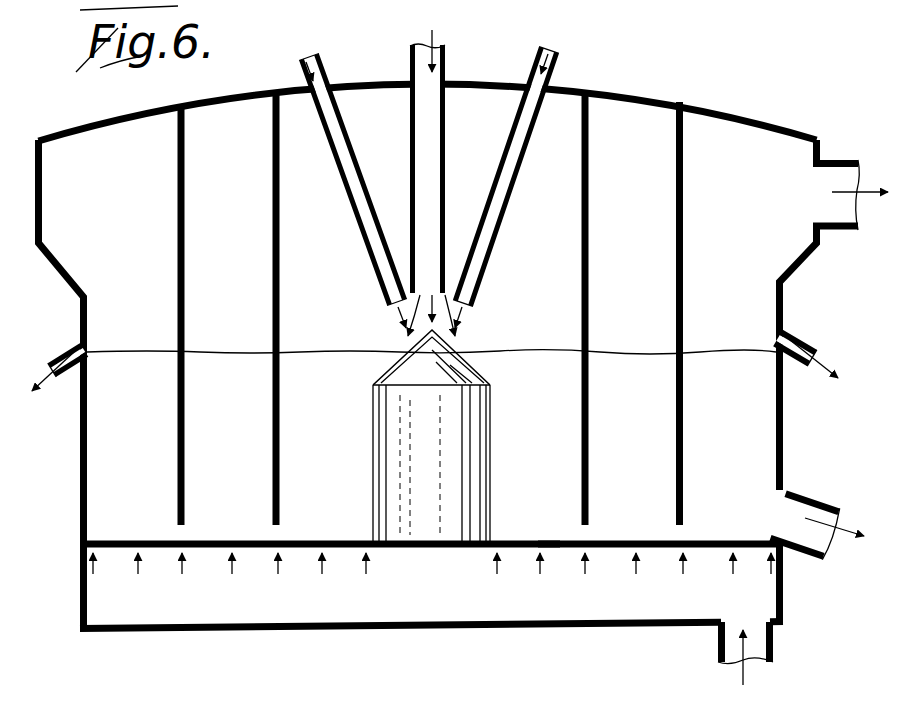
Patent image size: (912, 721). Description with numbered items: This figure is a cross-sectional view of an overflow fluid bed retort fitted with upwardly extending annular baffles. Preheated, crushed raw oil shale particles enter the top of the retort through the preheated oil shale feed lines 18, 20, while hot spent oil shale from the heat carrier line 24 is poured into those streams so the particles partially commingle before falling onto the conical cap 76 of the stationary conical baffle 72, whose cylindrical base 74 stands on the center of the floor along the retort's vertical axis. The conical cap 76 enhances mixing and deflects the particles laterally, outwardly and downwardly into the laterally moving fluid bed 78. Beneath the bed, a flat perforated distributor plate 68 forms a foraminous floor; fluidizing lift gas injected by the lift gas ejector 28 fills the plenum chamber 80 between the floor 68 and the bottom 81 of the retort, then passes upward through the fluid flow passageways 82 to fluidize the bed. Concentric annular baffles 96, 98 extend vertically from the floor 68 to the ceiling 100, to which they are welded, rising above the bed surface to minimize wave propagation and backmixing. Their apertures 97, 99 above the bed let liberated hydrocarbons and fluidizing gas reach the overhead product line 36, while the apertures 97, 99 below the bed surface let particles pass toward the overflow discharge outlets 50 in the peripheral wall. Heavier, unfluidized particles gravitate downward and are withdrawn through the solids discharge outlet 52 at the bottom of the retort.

The preheated oil shale feed line 18 is at (300, 82).
The preheated oil shale feed line 20 is at (556, 73).
The heat carrier line 24 is at (444, 70).
The lift gas ejector 28 is at (718, 650).
The product line 36 is at (843, 160).
The overflow discharge outlet 50 is at (70, 377).
The solids discharge outlet 52 is at (805, 497).
The perforated distributor plate 68 is at (322, 540).
The conical baffle 72 is at (373, 384).
The cylindrical base 74 is at (492, 467).
The conical cap 76 is at (470, 365).
The laterally moving fluid bed 78 is at (614, 350).
The plenum chamber 80 is at (445, 592).
The bottom 81 is at (445, 628).
The fluid flow passageways 82 is at (548, 547).
The annular baffle 96 is at (590, 237).
The apertures 97 is at (590, 165).
The annular baffle 98 is at (684, 232).
The apertures 99 is at (684, 165).
The ceiling 100 is at (697, 100).